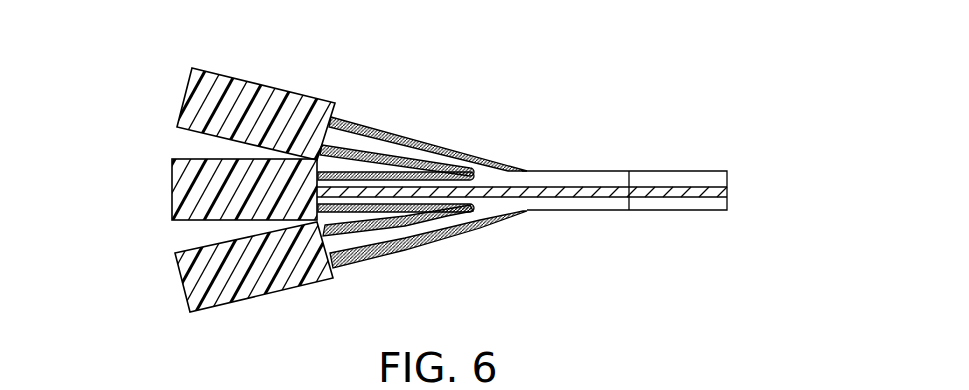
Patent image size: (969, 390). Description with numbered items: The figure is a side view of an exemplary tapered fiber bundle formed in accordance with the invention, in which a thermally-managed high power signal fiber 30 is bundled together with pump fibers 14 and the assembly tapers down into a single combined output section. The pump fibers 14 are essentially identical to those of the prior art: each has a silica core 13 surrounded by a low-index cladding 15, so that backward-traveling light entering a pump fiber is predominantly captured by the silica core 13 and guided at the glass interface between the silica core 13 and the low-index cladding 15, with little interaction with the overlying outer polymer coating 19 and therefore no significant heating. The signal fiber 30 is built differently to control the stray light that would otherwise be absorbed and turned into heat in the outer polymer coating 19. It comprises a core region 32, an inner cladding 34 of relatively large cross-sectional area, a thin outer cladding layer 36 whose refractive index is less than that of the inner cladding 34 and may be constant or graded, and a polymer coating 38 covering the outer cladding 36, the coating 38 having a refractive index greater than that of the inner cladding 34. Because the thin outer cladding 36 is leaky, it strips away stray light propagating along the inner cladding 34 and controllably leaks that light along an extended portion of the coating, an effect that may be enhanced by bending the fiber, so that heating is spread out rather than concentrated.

The silica core 13 is at (406, 152).
The pump fibers 14 is at (422, 110).
The low-index cladding 15 is at (358, 114).
The outer polymer coating 19 is at (224, 84).
The signal fiber 30 is at (139, 318).
The core region 32 is at (562, 188).
The inner cladding 34 is at (434, 205).
The thin outer cladding layer 36 is at (340, 208).
The polymer coating 38 is at (170, 207).